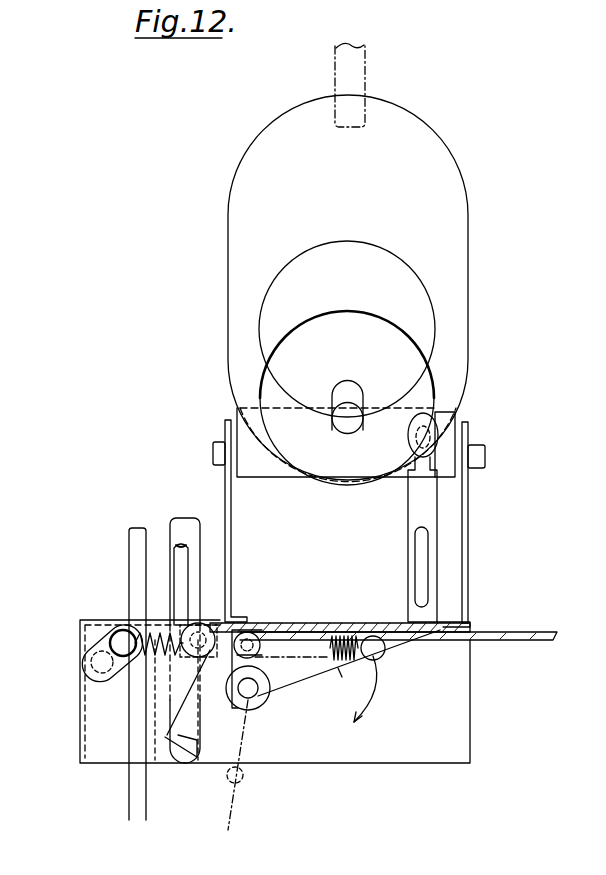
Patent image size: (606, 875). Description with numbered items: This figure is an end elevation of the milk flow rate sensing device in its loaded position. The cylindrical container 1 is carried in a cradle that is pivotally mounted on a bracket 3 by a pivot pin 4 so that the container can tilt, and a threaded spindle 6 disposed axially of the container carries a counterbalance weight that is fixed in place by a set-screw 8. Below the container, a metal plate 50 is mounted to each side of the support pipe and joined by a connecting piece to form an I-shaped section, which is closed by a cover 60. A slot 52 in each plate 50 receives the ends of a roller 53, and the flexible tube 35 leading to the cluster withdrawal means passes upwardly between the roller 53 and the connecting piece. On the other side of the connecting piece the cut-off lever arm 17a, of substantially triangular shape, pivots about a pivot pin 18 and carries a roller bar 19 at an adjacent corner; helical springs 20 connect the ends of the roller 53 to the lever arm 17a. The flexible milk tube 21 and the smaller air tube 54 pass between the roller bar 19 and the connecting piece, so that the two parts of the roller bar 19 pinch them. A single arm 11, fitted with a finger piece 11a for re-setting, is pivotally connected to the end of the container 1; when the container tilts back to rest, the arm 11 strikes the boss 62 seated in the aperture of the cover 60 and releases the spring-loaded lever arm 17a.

The cylindrical container 1 is at (465, 215).
The bracket 3 is at (233, 500).
The pivot pin 4 is at (213, 447).
The threaded spindle 6 is at (356, 397).
The set-screw 8 is at (378, 308).
The arm 11 is at (432, 506).
The finger piece 11a is at (424, 560).
The lever arm 17a is at (352, 689).
The pivot pin 18 is at (252, 623).
The roller bar 19 is at (262, 702).
The helical spring 20 is at (148, 630).
The flexible tube 21 is at (366, 72).
The flexible tube 35 is at (130, 792).
The metal plate 50 is at (84, 721).
The slot 52 is at (92, 660).
The roller 53 is at (108, 636).
The flexible tube 54 is at (184, 554).
The cover 60 is at (463, 627).
The boss 62 is at (421, 634).